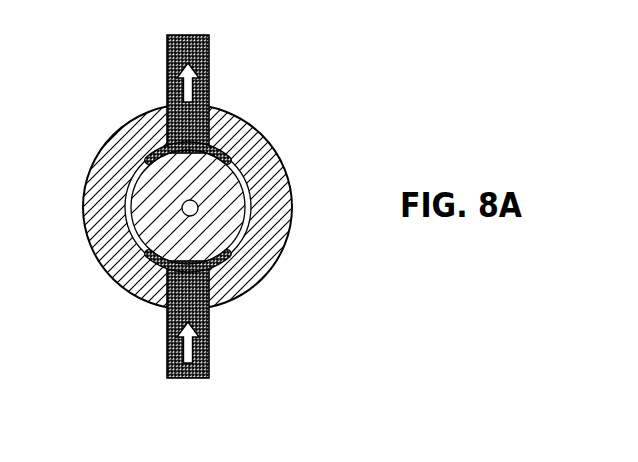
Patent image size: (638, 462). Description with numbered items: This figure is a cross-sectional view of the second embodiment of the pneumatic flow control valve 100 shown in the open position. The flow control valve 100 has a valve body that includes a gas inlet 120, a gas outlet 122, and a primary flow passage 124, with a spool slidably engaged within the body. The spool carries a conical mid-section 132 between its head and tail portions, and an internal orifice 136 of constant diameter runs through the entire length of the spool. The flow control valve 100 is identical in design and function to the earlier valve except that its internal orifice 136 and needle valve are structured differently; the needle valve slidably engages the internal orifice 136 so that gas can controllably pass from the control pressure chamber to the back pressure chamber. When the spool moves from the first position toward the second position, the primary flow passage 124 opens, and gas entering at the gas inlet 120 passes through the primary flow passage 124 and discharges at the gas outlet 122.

The flow control valve 100 is at (319, 109).
The gas inlet 120 is at (203, 348).
The gas outlet 122 is at (198, 60).
The primary flow passage 124 is at (140, 243).
The conical mid-section 132 is at (227, 228).
The internal orifice 136 is at (197, 206).